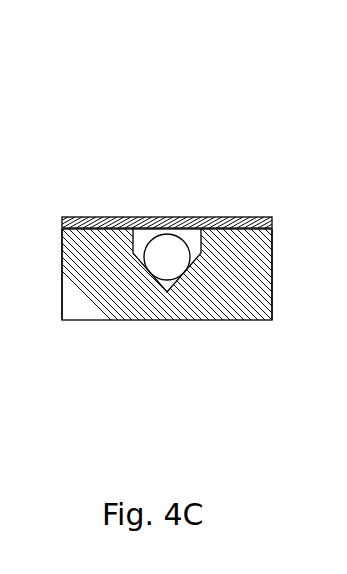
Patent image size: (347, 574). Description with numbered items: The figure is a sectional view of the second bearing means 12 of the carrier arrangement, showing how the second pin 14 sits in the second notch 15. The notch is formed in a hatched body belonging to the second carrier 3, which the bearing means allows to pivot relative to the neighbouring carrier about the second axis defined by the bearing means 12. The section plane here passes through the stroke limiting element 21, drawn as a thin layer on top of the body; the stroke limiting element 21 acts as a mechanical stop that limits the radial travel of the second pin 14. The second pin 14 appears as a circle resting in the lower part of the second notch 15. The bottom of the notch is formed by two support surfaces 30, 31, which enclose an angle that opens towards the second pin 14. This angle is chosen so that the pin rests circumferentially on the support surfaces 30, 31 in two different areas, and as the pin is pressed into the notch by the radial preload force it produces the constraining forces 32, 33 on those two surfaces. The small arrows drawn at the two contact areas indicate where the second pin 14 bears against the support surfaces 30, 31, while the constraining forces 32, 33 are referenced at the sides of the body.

The second bearing means 12 is at (98, 91).
The second carrier 3 is at (271, 228).
The second notch 15 is at (120, 218).
The stroke limiting element 21 is at (145, 218).
The second pin 14 is at (195, 229).
The support surface 30 is at (147, 278).
The support surface 31 is at (180, 278).
The constraining force 32 is at (98, 321).
The constraining force 33 is at (242, 321).